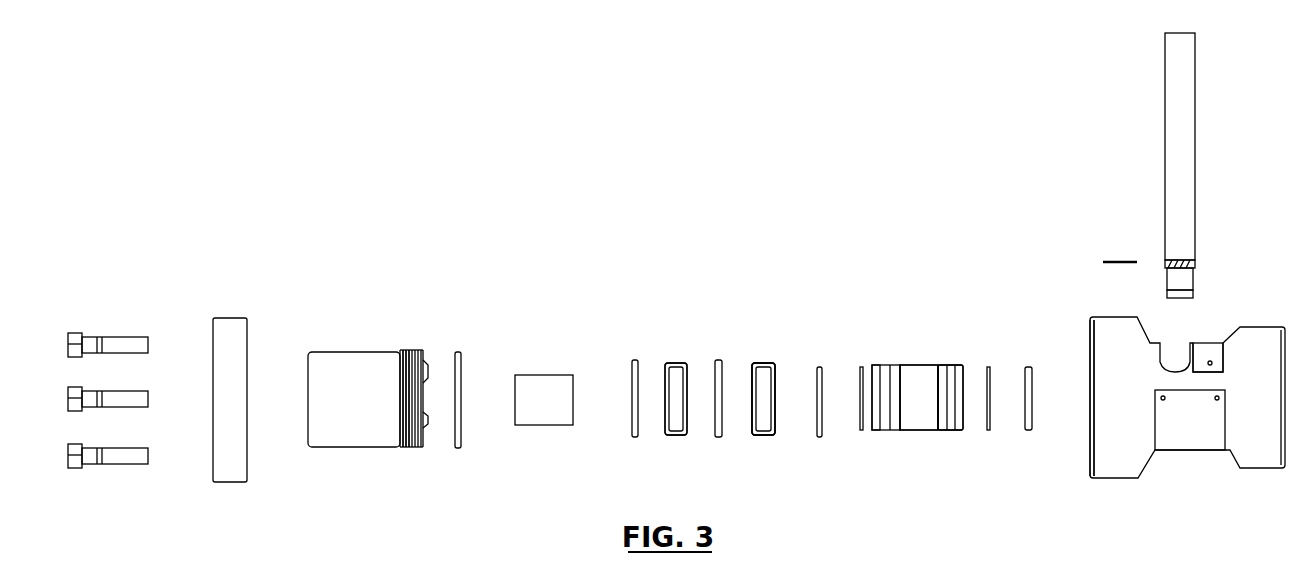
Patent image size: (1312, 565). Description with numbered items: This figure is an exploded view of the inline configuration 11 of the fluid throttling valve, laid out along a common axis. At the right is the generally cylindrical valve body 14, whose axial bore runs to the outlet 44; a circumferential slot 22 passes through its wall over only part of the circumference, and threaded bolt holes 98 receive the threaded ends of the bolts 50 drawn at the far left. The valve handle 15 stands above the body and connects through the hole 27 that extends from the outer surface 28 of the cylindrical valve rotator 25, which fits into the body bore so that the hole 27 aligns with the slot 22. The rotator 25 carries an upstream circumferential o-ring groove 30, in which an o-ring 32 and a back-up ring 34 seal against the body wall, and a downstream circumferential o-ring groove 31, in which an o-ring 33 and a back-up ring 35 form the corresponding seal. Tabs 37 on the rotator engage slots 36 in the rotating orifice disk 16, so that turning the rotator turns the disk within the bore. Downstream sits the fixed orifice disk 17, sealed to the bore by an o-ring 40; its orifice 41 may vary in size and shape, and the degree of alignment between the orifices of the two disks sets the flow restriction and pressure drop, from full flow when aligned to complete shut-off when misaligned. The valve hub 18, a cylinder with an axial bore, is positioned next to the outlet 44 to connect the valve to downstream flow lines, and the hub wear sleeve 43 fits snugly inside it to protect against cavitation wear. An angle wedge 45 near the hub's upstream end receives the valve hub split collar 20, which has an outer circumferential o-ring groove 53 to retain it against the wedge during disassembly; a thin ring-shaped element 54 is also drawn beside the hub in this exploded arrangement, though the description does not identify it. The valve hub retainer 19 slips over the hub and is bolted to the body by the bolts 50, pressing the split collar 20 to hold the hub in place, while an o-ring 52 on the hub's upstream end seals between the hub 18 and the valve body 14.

The inline configuration 11 is at (508, 263).
The valve body 14 is at (1273, 447).
The valve handle 15 is at (1195, 197).
The rotating orifice disk 16 is at (762, 435).
The fixed orifice disk 17 is at (672, 363).
The valve hub 18 is at (342, 367).
The valve hub retainer 19 is at (235, 460).
The valve hub split collar 20 is at (407, 350).
The circumferential slot 22 is at (1180, 362).
The valve rotator 25 is at (940, 432).
The hole 27 is at (921, 366).
The outer surface 28 is at (920, 403).
The circumferential o-ring groove 30 is at (951, 366).
The circumferential o-ring groove 31 is at (890, 366).
The o-ring 32 is at (1030, 432).
The o-ring 33 is at (820, 437).
The back-up ring 34 is at (989, 366).
The back-up ring 35 is at (862, 430).
The slots 36 is at (777, 363).
The tabs 37 is at (874, 366).
The o-ring 40 is at (720, 437).
The orifice 41 is at (667, 390).
The hub wear sleeve 43 is at (540, 375).
The outlet 44 is at (1090, 393).
The angle wedge 45 is at (417, 350).
The bolts 50 is at (122, 464).
The o-ring 52 is at (636, 437).
The outer circumferential o-ring groove 53 is at (407, 450).
The plate 54 is at (457, 352).
The threaded bolt holes 98 is at (1090, 355).